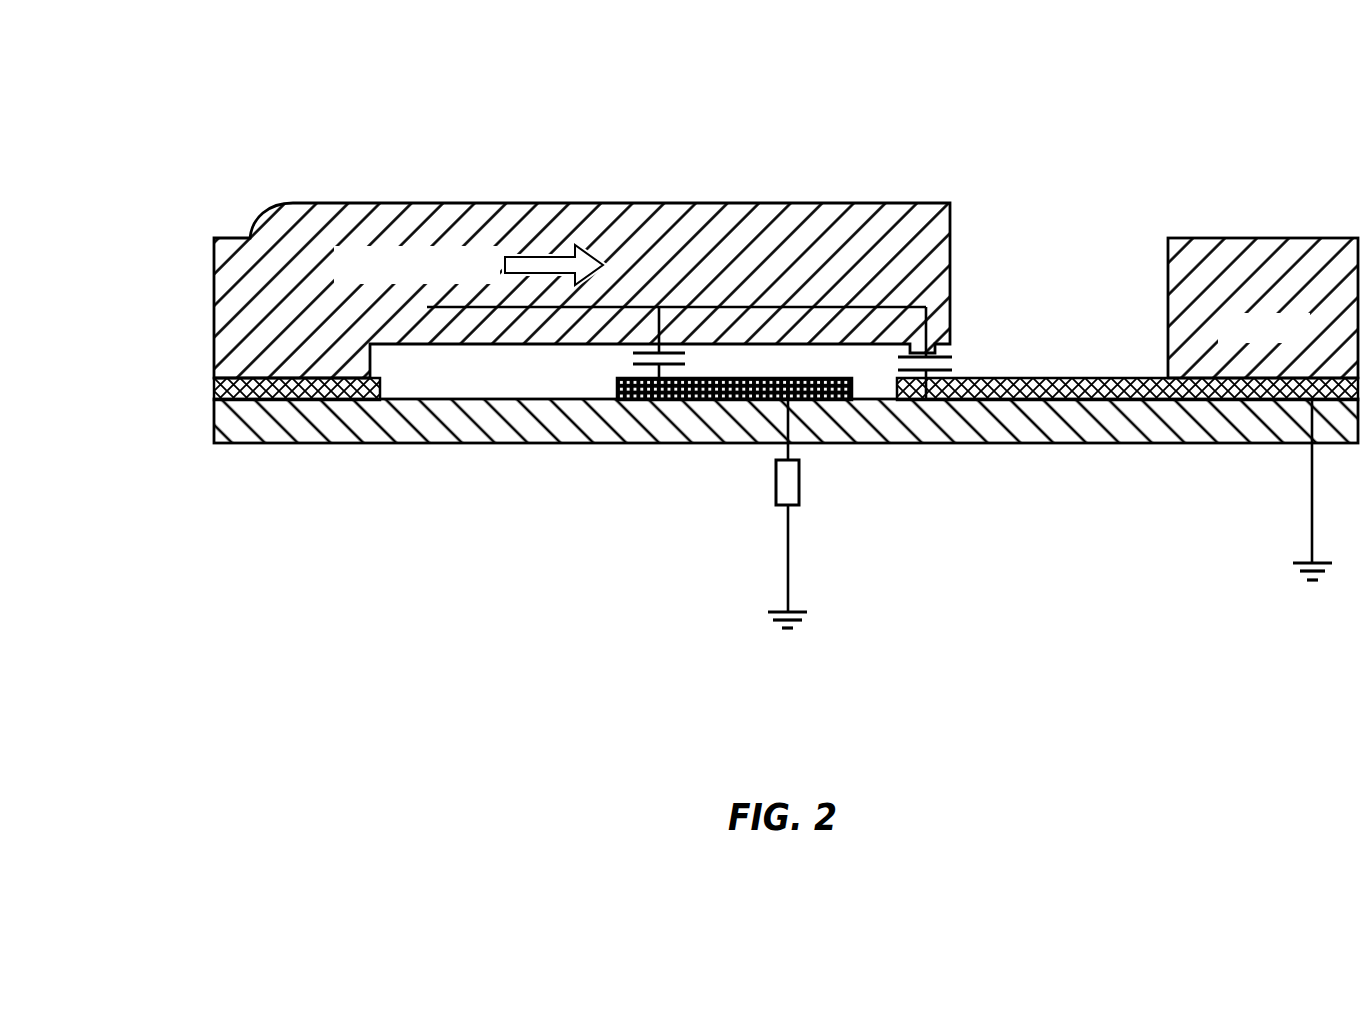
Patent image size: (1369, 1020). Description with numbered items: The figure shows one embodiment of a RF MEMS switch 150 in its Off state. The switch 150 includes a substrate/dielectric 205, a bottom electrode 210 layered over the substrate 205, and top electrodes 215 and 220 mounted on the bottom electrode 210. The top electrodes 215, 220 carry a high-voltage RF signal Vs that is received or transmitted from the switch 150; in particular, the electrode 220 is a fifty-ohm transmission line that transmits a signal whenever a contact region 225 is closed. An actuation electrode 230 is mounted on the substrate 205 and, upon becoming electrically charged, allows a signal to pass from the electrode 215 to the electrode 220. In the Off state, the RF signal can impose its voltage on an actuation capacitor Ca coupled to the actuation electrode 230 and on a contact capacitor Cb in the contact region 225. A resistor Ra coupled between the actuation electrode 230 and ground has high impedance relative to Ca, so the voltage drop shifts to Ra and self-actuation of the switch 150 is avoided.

The RF MEMS switch 150 is at (699, 347).
The substrate/dielectric 205 is at (213, 428).
The bottom electrode 210 is at (213, 390).
The top electrode 215 is at (213, 295).
The top electrode (transmission line) 220 is at (1243, 238).
The contact region 225 is at (945, 382).
The actuation electrode 230 is at (852, 370).